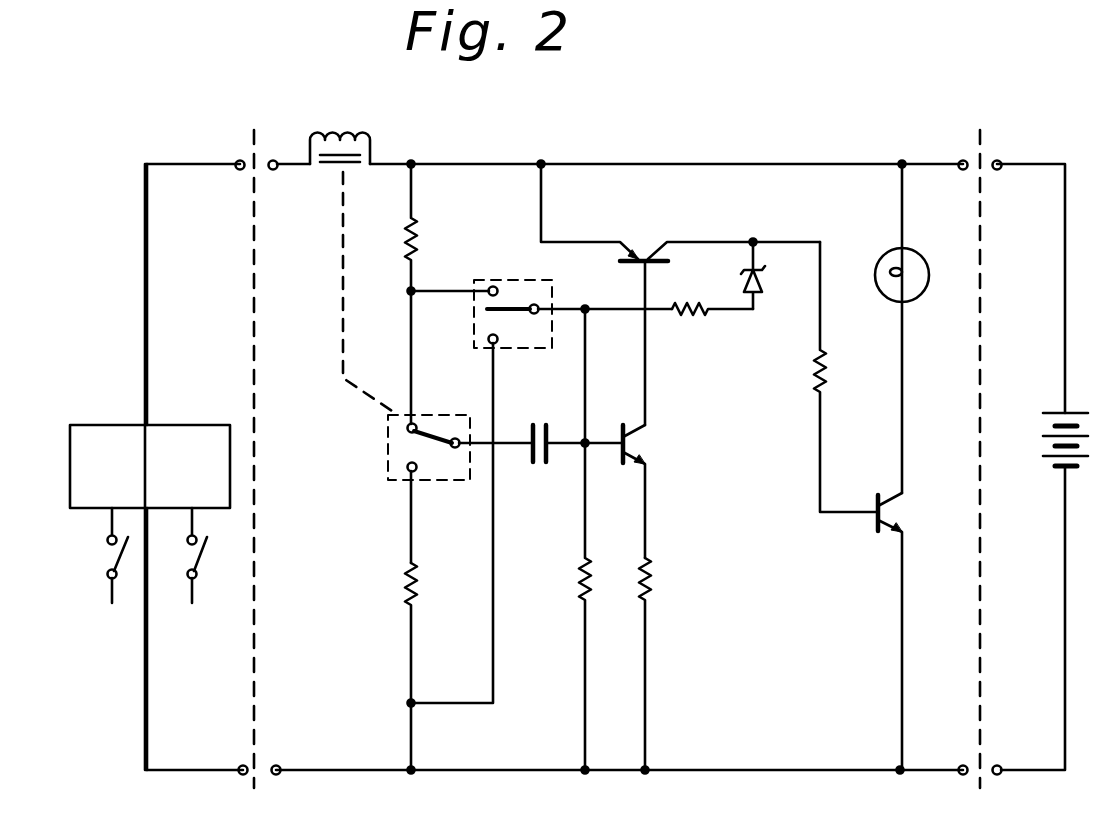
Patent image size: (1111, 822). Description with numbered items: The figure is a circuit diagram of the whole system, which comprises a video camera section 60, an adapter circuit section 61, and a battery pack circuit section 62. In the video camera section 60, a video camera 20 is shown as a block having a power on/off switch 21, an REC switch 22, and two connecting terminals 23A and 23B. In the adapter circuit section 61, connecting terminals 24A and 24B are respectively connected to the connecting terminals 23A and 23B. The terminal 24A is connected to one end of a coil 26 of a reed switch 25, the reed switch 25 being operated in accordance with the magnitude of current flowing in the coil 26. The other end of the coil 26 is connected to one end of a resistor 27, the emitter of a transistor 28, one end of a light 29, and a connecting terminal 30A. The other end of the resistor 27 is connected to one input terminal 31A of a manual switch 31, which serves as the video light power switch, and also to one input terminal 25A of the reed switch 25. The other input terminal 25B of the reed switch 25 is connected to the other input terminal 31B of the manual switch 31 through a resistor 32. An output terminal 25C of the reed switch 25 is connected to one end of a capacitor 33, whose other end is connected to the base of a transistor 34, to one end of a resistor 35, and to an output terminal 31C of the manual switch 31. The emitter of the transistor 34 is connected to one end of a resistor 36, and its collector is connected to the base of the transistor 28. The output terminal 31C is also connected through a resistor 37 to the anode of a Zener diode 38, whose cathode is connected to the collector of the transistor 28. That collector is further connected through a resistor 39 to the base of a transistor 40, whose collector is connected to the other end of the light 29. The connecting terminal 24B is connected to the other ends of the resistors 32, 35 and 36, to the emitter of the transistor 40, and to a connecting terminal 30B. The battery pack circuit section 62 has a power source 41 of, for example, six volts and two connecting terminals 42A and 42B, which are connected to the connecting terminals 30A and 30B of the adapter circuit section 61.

The video camera 20 is at (148, 424).
The power on/off switch 21 is at (106, 548).
The REC switch 22 is at (201, 553).
The connecting terminal 23A is at (238, 171).
The connecting terminal 23B is at (240, 766).
The connecting terminal 24A is at (273, 170).
The connecting terminal 24B is at (278, 764).
The reed switch 25 is at (436, 482).
The input terminal of reed switch 25A is at (406, 430).
The input terminal of reed switch 25B is at (408, 470).
The output terminal of reed switch 25C is at (454, 438).
The coil 26 is at (345, 128).
The resistor 27 is at (418, 236).
The transistor 28 is at (637, 252).
The light 29 is at (914, 290).
The connecting terminal 30A is at (962, 170).
The connecting terminal 30B is at (962, 764).
The manual switch 31 is at (515, 280).
The input terminal of manual switch 31A is at (490, 286).
The input terminal of manual switch 31B is at (498, 343).
The output terminal of manual switch 31C is at (538, 306).
The resistor 32 is at (398, 578).
The capacitor 33 is at (539, 464).
The transistor 34 is at (640, 446).
The resistor 35 is at (578, 580).
The resistor 36 is at (650, 580).
The resistor 37 is at (688, 320).
The Zener diode 38 is at (766, 282).
The resistor 39 is at (814, 368).
The transistor 40 is at (886, 536).
The power source 41 is at (1042, 456).
The connecting terminal 42A is at (998, 170).
The connecting terminal 42B is at (998, 764).
The video camera section 60 is at (185, 158).
The adapter circuit section 61 is at (614, 156).
The battery pack circuit section 62 is at (1066, 160).